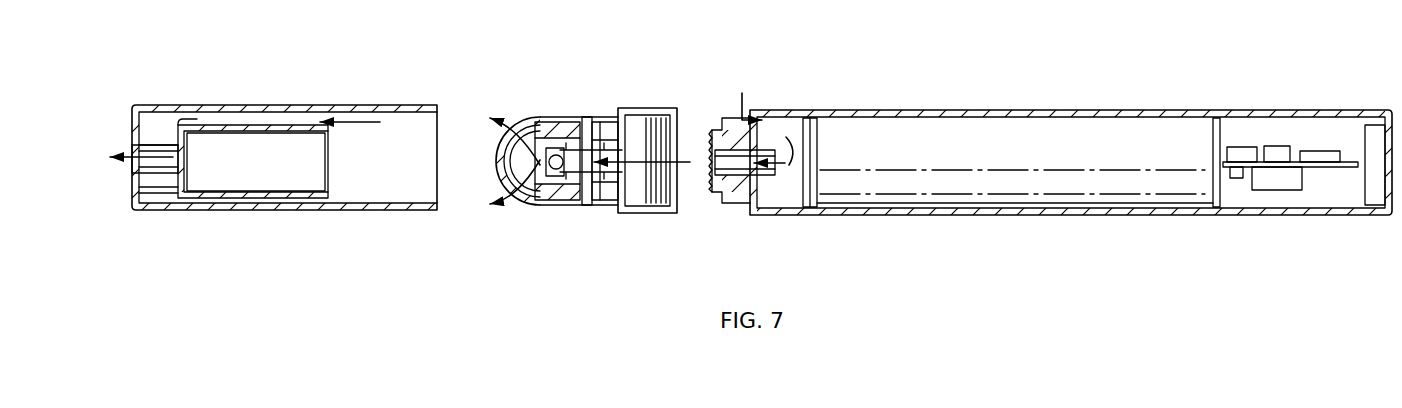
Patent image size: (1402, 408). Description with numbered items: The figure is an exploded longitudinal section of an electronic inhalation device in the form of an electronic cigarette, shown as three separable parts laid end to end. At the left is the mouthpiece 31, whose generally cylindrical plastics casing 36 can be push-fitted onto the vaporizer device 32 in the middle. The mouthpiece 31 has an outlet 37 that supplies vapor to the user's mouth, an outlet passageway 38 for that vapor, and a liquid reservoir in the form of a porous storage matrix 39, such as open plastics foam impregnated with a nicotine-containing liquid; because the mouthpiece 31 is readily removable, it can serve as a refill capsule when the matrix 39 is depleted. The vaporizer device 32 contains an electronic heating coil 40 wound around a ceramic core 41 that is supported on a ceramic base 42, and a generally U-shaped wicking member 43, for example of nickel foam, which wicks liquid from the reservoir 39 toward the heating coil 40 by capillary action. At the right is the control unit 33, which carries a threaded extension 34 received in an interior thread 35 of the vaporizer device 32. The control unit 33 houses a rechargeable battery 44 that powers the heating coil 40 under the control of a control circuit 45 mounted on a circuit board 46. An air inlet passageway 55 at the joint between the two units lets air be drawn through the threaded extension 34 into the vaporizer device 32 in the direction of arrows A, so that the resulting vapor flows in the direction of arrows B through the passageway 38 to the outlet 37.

The mouthpiece 31 is at (279, 110).
The vaporizer device 32 is at (594, 118).
The control unit 33 is at (1030, 117).
The threaded extension 34 is at (728, 203).
The interior thread 35 is at (663, 213).
The plastics casing 36 is at (343, 108).
The outlet 37 is at (140, 153).
The outlet passageway 38 is at (228, 120).
The porous storage matrix 39 is at (260, 183).
The heating coil 40 is at (557, 200).
The ceramic core 41 is at (548, 120).
The ceramic base 42 is at (592, 205).
The U-shaped wicking member 43 is at (492, 165).
The rechargeable battery 44 is at (1068, 200).
The control circuit 45 is at (1327, 170).
The circuit board 46 is at (1296, 147).
The air inlet passageway 55 is at (787, 120).
The arrows A is at (790, 180).
The arrows B is at (510, 118).